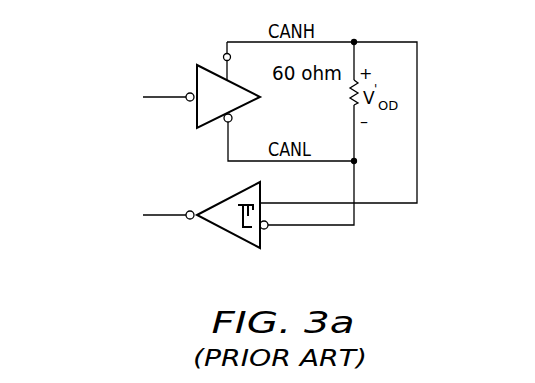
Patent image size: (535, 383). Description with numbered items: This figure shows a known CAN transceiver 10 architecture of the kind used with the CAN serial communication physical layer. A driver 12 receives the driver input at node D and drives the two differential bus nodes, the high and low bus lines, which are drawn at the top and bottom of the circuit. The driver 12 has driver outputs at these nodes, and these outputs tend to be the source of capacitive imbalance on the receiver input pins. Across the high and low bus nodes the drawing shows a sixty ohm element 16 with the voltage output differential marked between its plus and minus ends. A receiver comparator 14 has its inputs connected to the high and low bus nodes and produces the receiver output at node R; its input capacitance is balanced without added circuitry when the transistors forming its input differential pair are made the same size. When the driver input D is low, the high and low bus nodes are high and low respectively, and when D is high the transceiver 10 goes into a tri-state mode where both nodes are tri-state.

The CAN transceiver 10 is at (121, 175).
The driver 12 is at (197, 115).
The receiver comparator 14 is at (226, 235).
The 60 ohm termination resistor 16 is at (350, 95).